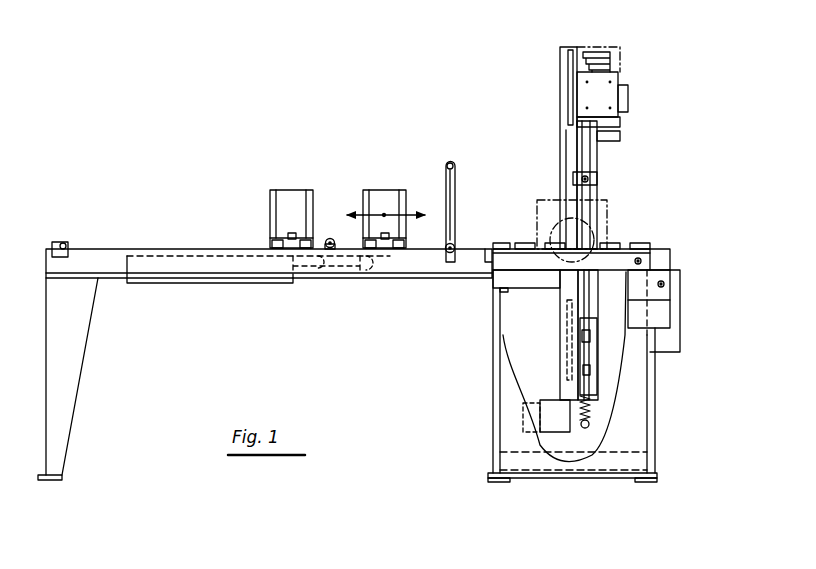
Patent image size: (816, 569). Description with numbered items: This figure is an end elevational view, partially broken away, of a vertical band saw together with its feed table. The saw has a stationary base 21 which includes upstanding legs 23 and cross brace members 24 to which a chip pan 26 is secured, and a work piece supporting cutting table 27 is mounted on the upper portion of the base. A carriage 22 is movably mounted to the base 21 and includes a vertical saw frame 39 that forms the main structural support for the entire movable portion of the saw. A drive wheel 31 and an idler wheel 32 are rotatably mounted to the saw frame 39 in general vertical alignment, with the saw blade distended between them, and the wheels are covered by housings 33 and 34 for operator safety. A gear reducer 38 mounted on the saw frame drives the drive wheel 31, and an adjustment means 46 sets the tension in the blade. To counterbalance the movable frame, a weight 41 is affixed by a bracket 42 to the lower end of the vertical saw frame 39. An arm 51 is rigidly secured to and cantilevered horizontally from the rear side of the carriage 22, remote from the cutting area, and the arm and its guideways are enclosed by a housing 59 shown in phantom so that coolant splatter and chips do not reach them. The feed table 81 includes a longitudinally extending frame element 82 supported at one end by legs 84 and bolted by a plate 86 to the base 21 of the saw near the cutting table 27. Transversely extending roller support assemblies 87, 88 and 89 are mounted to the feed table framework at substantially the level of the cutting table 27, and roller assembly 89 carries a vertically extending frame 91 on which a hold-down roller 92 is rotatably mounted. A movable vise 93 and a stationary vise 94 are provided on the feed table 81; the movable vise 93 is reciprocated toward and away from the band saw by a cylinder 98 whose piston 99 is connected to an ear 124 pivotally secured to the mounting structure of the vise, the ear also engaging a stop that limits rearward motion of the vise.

The stationary base portion 21 is at (681, 262).
The carriage 22 is at (621, 152).
The upstanding legs 23 is at (656, 412).
The cross brace members 24 is at (500, 455).
The chip pan 26 is at (613, 453).
The cutting table 27 is at (641, 242).
The drive wheel 31 is at (565, 76).
The idler wheel 32 is at (563, 331).
The housing 33 is at (560, 47).
The housing 34 is at (563, 371).
The gear reducer 38 is at (604, 88).
The vertical saw frame 39 is at (599, 173).
The weight 41 is at (557, 427).
The bracket 42 is at (534, 406).
The adjustment means 46 is at (593, 410).
The arm 51 is at (553, 228).
The housing 59 is at (552, 200).
The feed table 81 is at (215, 211).
The feed table frame element 82 is at (412, 265).
The legs 84 is at (70, 375).
The plate 86 is at (486, 258).
The roller support assembly 87 is at (64, 243).
The roller support assembly 88 is at (331, 238).
The transverse roller assembly 89 is at (454, 251).
The vertically extending frame 91 is at (446, 185).
The hold-down roller 92 is at (451, 161).
The movable vise 93 is at (382, 202).
The stationary vise 94 is at (290, 210).
The cylinder 98 is at (180, 284).
The piston 99 is at (321, 284).
The ear 124 is at (364, 288).